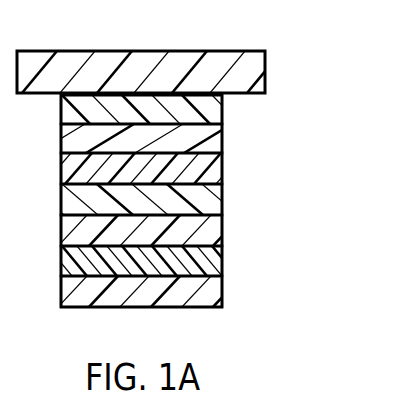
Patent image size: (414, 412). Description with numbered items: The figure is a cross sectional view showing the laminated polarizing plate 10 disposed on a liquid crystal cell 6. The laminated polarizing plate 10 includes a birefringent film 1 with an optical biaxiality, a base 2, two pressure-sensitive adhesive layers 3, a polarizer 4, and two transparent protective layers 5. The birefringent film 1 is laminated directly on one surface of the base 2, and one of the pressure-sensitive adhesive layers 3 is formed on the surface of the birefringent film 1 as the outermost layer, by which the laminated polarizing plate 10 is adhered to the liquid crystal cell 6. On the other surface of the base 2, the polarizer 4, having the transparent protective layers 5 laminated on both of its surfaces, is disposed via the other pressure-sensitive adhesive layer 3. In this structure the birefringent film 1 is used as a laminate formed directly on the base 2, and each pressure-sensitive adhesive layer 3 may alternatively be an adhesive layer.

The liquid crystal cell 6 is at (255, 75).
The laminated polarizing plate 10 is at (207, 203).
The pressure-sensitive adhesive layer 3 is at (222, 110).
The birefringent film 1 is at (222, 140).
The base 2 is at (222, 170).
The transparent protective layer 5 is at (222, 231).
The polarizer 4 is at (174, 261).